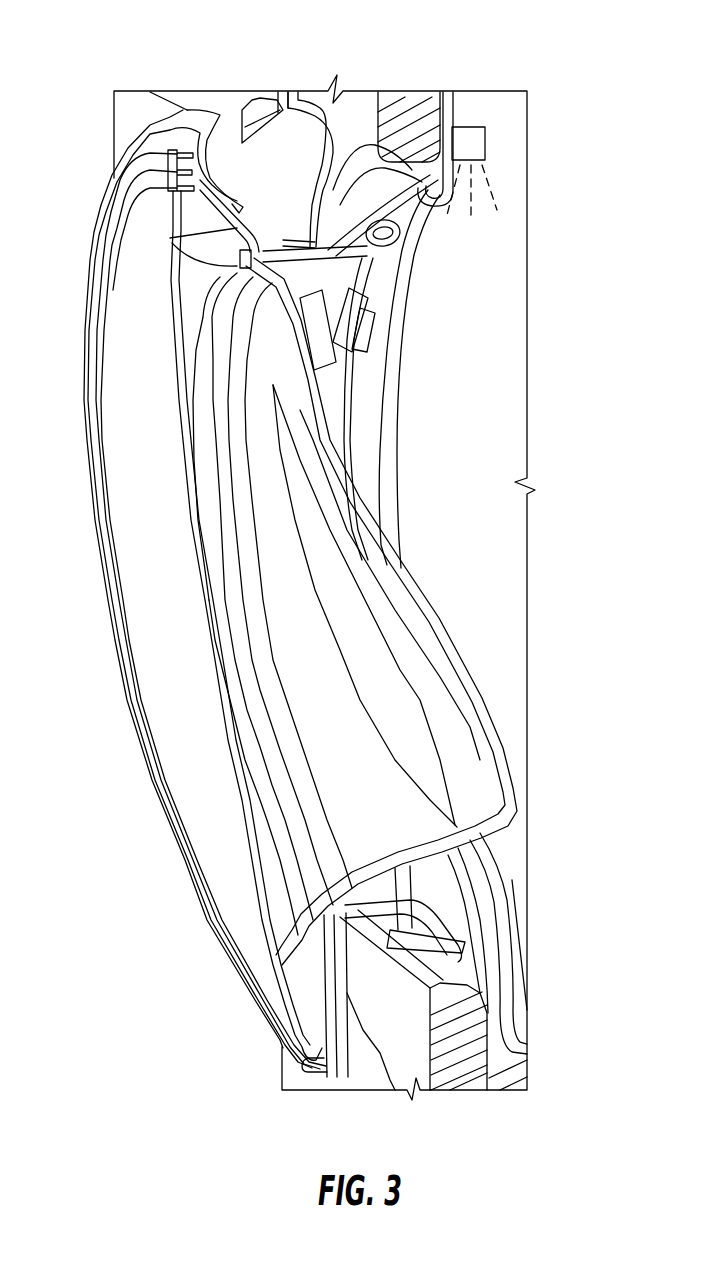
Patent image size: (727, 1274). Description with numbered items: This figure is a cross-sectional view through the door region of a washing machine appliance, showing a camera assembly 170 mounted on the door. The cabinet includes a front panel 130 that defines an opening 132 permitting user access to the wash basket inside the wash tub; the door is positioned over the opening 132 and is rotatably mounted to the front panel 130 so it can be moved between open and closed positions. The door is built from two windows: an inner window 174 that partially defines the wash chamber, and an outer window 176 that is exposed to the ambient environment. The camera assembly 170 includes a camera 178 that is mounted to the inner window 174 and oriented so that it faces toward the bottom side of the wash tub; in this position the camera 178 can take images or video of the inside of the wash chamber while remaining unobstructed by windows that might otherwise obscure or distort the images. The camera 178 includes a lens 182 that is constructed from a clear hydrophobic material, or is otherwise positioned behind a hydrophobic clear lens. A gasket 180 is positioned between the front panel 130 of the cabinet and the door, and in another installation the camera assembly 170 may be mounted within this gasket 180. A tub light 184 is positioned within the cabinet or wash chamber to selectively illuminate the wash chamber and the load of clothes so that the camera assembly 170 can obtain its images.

The front panel 130 is at (453, 1045).
The opening 132 is at (457, 966).
The camera assembly 170 is at (370, 359).
The inner window 174 is at (390, 575).
The outer window 176 is at (208, 628).
The camera 178 is at (363, 288).
The gasket 180 is at (308, 110).
The lens 182 is at (373, 328).
The tub light 184 is at (487, 143).